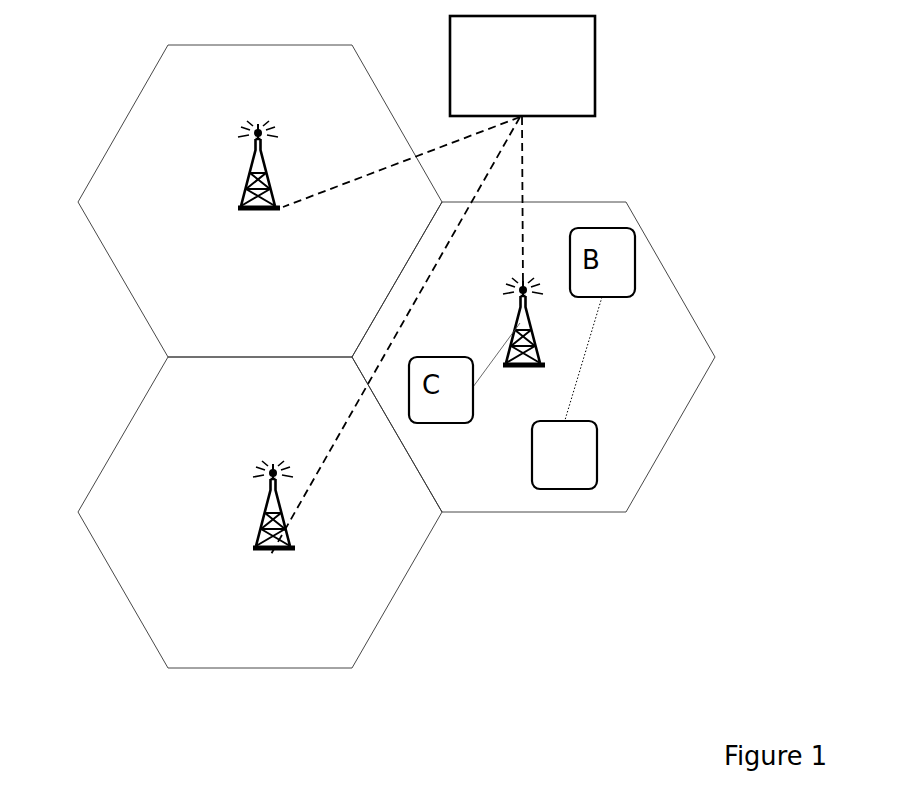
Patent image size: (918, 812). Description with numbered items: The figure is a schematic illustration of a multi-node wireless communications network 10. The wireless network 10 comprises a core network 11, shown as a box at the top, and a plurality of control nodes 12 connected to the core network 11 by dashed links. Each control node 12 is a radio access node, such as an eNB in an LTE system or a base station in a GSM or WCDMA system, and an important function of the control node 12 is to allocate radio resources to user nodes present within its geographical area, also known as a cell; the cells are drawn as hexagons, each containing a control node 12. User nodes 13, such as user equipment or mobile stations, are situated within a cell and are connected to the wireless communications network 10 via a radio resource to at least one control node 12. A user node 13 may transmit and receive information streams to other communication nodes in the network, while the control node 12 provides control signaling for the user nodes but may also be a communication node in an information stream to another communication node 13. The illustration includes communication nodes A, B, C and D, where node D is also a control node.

The multi-node wireless communications network 10 is at (99, 70).
The core network 11 is at (595, 60).
The control node 12 is at (540, 334).
The user node 13 is at (598, 469).